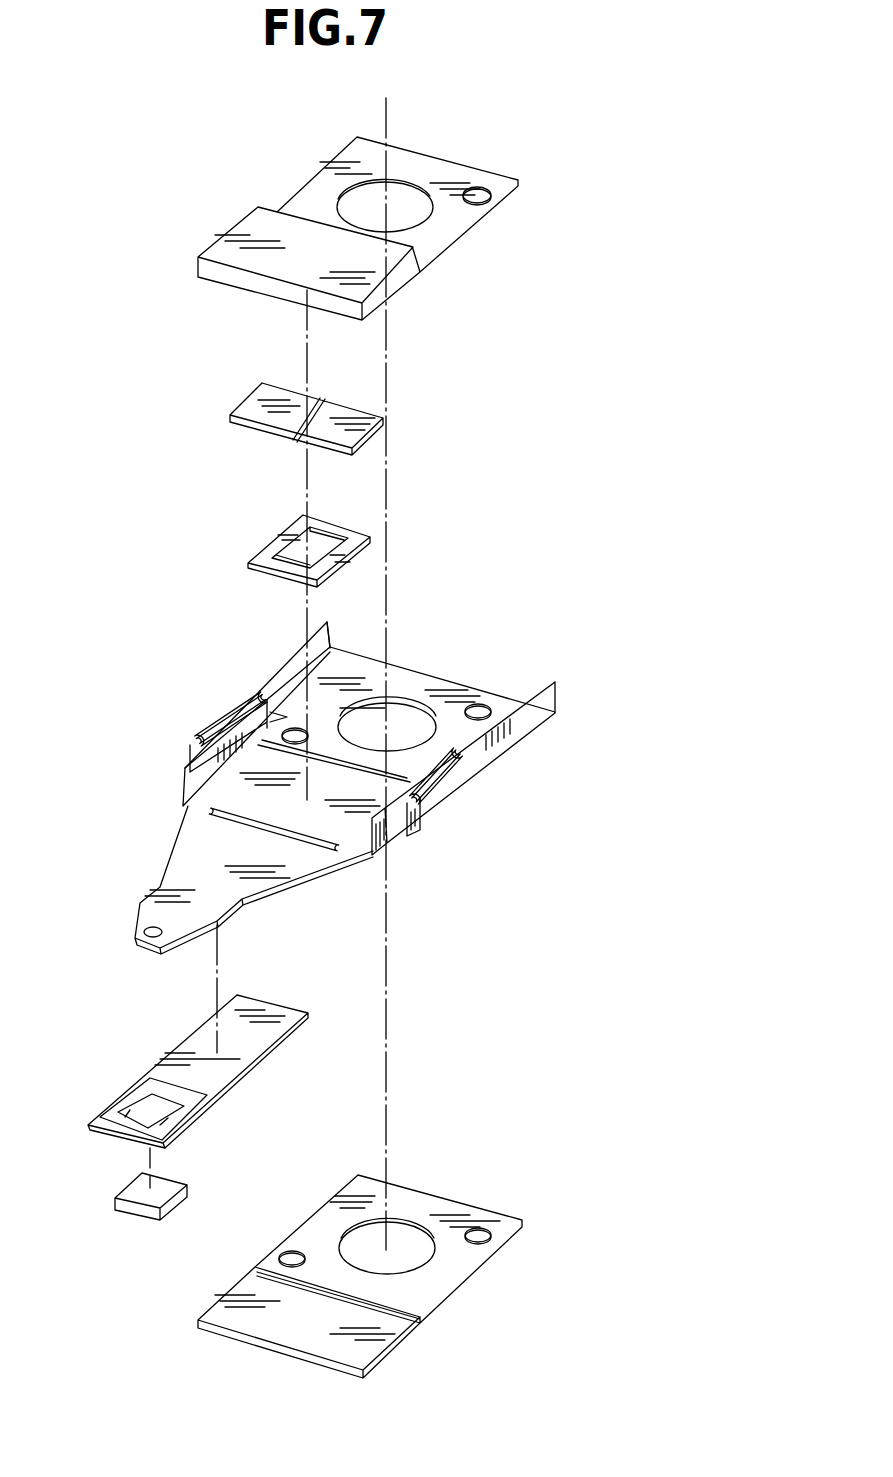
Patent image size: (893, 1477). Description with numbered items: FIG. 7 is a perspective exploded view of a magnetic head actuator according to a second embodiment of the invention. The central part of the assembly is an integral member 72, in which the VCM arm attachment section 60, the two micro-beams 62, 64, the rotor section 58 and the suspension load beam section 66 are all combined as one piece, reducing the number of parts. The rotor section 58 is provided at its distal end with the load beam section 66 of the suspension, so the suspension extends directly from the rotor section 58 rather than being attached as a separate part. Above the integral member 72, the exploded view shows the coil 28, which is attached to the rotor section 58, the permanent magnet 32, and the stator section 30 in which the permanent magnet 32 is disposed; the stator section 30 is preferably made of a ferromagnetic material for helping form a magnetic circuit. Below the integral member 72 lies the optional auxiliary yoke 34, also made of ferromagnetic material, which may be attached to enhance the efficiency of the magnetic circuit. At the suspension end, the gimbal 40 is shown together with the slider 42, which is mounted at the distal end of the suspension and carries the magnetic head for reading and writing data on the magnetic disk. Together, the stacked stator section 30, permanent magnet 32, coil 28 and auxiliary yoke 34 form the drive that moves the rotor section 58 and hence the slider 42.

The coil 28 is at (270, 542).
The stator section 30 is at (302, 200).
The permanent magnet 32 is at (248, 407).
The auxiliary yoke 34 is at (450, 1198).
The gimbal 40 is at (142, 1075).
The slider 42 is at (130, 1213).
The rotor section 58 is at (293, 805).
The VCM arm attachment section 60 is at (413, 685).
The micro-beam 62 is at (415, 823).
The micro-beam 64 is at (195, 755).
The suspension load beam section 66 is at (207, 875).
The integral member 72 is at (478, 668).